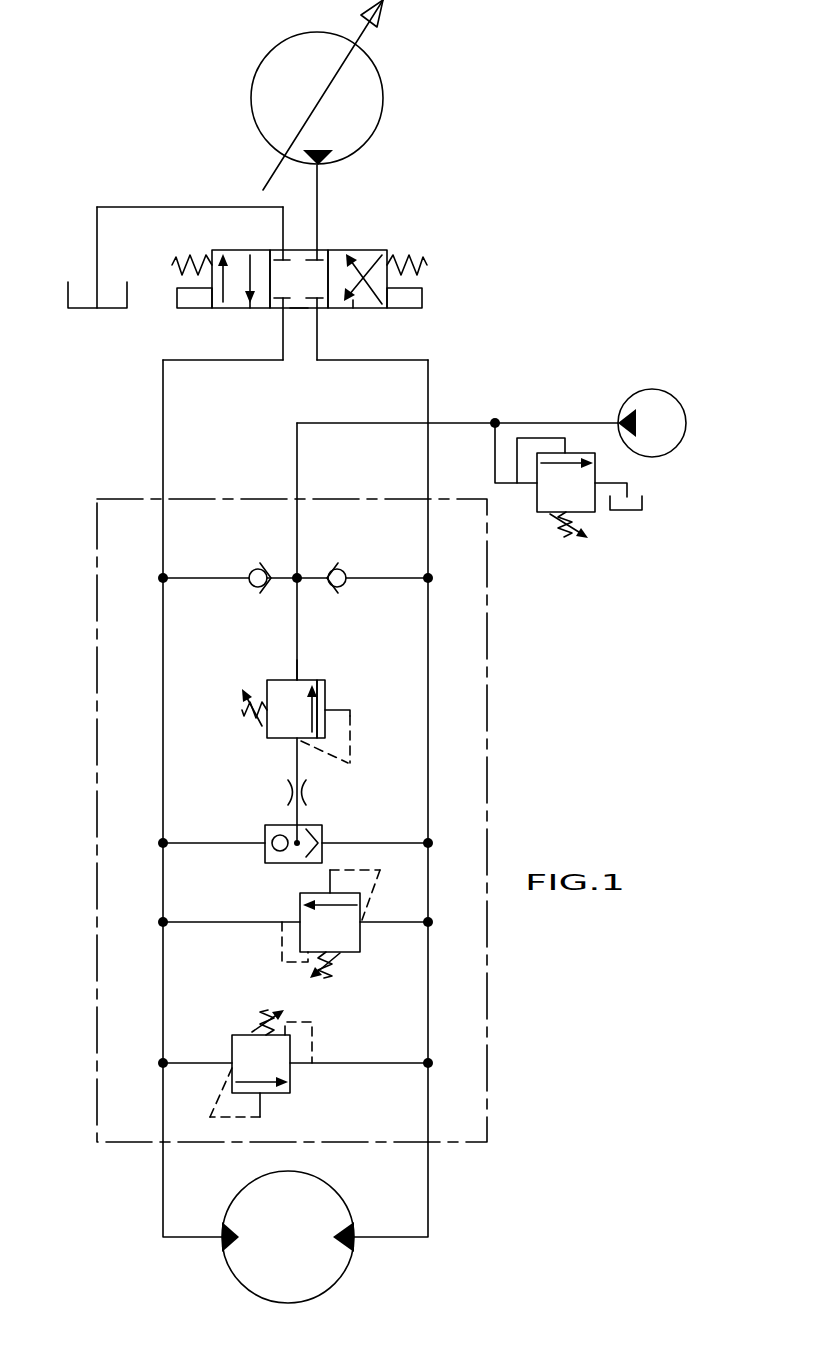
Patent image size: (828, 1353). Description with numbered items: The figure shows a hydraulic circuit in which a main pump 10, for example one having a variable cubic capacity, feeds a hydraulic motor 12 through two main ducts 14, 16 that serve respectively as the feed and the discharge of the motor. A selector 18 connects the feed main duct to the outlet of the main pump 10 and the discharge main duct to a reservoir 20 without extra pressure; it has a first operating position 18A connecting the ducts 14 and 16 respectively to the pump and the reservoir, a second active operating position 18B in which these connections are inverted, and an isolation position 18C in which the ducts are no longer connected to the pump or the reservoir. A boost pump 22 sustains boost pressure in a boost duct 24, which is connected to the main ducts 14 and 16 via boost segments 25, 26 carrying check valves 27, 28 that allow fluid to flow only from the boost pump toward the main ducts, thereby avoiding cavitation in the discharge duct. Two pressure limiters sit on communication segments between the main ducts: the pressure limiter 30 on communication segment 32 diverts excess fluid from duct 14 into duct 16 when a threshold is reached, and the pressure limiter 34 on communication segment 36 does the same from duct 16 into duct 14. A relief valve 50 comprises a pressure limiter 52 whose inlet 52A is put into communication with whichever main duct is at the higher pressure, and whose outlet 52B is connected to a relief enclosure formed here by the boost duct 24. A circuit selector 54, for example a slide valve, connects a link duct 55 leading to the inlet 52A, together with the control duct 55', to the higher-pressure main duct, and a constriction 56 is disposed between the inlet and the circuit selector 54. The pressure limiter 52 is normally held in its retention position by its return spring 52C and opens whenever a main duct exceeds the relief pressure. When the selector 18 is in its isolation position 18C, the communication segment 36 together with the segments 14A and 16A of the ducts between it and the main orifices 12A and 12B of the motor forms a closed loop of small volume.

The main pump 10 is at (386, 97).
The hydraulic motor 12 is at (318, 1297).
The main orifice of the motor 12A is at (216, 1239).
The main orifice of the motor 12B is at (365, 1240).
The main duct 14 is at (163, 610).
The segment of duct 14 14A is at (163, 1194).
The main duct 16 is at (428, 608).
The segment of duct 16 16A is at (428, 1194).
The selector 18 is at (366, 226).
The first operating position 18A is at (353, 309).
The second active operating position 18B is at (250, 309).
The isolation position 18C is at (298, 310).
The reservoir 20 is at (97, 310).
The boost pump 22 is at (652, 389).
The boost duct 24 is at (365, 423).
The boost segment 25 is at (203, 578).
The boost segment 26 is at (382, 578).
The check valve 27 is at (262, 567).
The check valve 28 is at (335, 567).
The pressure limiter 30 is at (232, 1050).
The communication segment 32 is at (358, 1063).
The pressure limiter 34 is at (360, 940).
The communication segment 36 is at (222, 922).
The relief valve 50 is at (341, 660).
The pressure limiter 52 is at (328, 689).
The inlet 52A is at (293, 742).
The outlet 52B is at (295, 678).
The return spring 52C is at (242, 708).
The circuit selector 54 is at (323, 838).
The link duct 55 is at (330, 755).
The control duct 55' is at (379, 739).
The constriction 56 is at (288, 792).